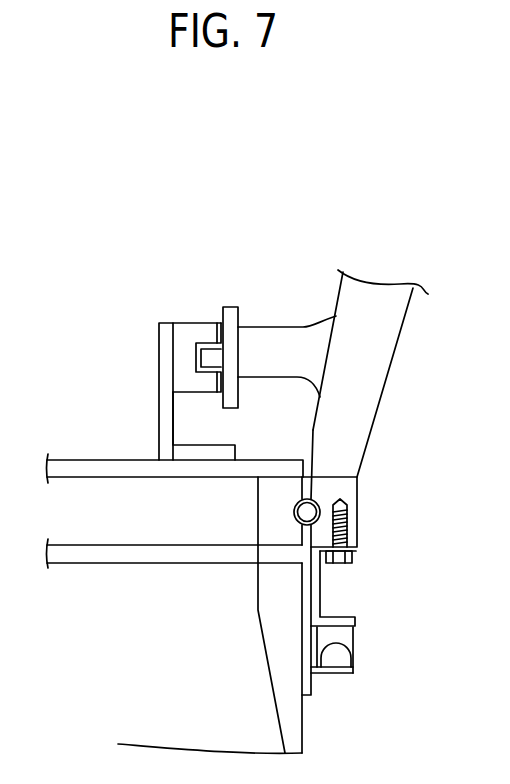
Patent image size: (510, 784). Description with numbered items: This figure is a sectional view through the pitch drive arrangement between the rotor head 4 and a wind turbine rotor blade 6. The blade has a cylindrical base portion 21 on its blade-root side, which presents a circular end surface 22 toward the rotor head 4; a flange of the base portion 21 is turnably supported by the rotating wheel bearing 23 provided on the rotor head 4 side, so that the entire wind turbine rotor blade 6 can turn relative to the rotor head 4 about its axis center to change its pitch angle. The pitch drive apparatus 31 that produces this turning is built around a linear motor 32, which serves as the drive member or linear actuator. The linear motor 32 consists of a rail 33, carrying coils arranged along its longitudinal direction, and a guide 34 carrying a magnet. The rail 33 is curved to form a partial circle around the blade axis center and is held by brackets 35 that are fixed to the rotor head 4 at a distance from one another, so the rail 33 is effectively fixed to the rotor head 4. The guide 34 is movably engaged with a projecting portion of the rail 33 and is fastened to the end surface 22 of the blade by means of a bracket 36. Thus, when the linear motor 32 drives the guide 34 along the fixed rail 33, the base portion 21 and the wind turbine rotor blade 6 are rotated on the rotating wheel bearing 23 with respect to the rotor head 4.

The rotor head 4 is at (392, 368).
The wind turbine rotor blade 6 is at (302, 722).
The base portion 21 is at (108, 598).
The end surface 22 is at (73, 459).
The rotating wheel bearing 23 is at (358, 502).
The pitch drive apparatus 31 is at (150, 218).
The linear motor 32 is at (206, 280).
The rail 33 is at (232, 306).
The guide 34 is at (187, 322).
The bracket 35 is at (304, 326).
The bracket 36 is at (158, 360).